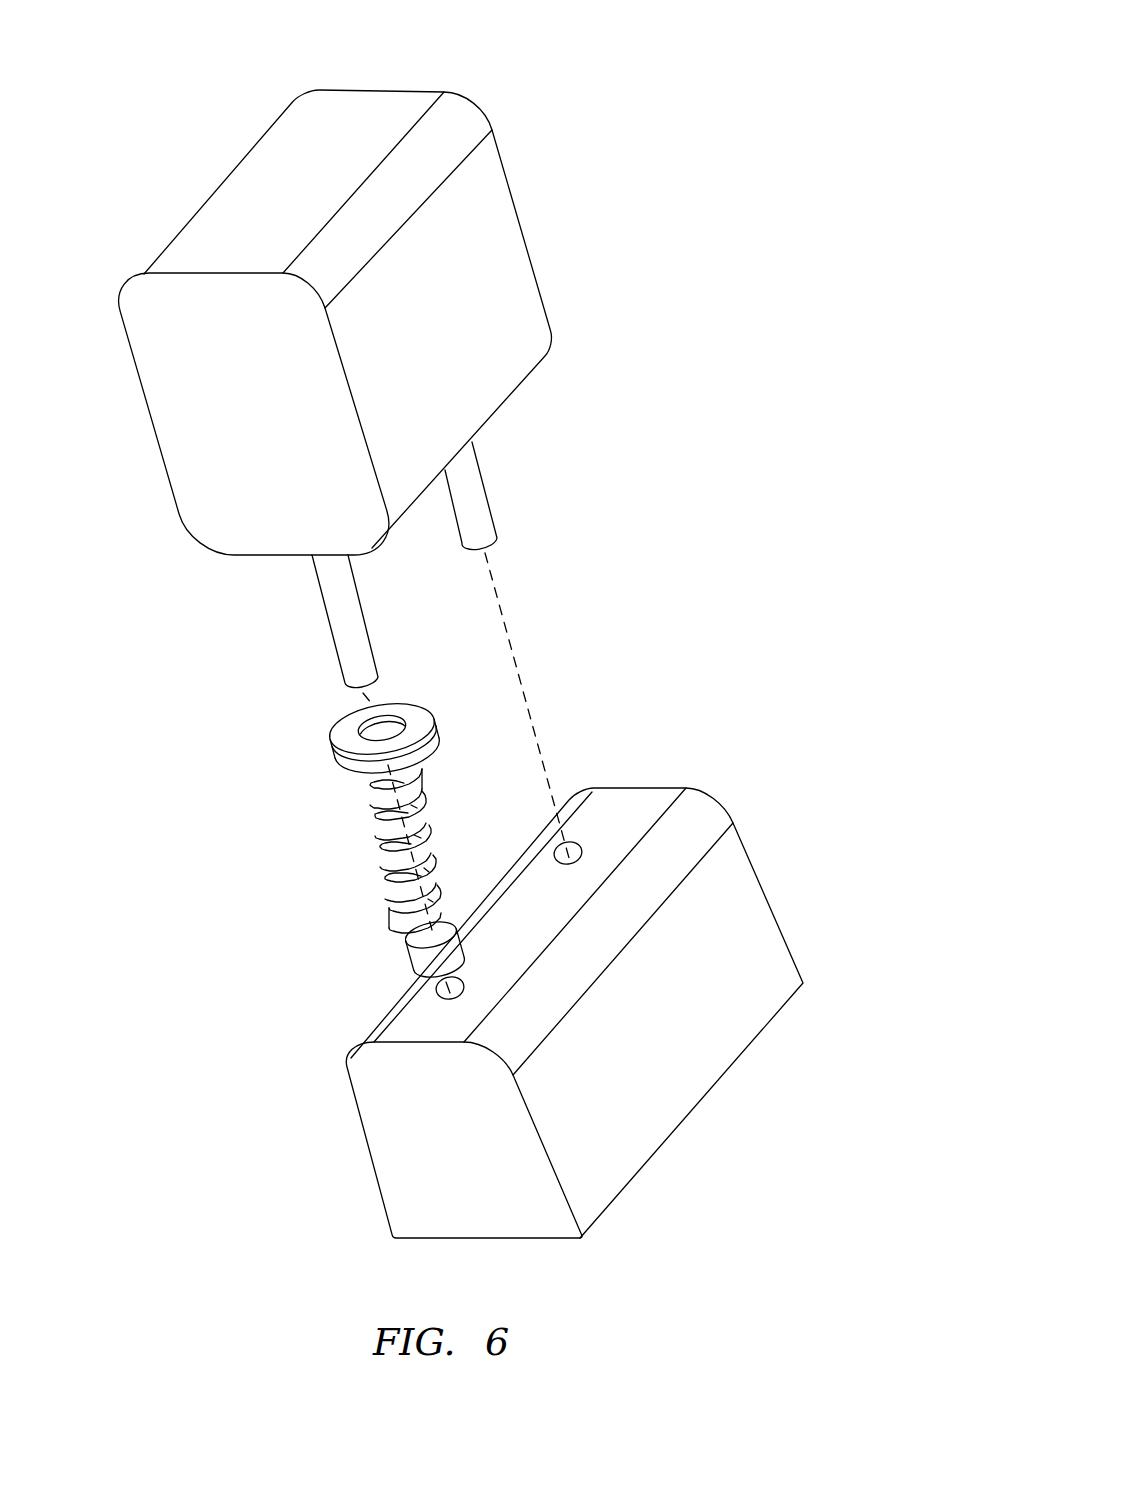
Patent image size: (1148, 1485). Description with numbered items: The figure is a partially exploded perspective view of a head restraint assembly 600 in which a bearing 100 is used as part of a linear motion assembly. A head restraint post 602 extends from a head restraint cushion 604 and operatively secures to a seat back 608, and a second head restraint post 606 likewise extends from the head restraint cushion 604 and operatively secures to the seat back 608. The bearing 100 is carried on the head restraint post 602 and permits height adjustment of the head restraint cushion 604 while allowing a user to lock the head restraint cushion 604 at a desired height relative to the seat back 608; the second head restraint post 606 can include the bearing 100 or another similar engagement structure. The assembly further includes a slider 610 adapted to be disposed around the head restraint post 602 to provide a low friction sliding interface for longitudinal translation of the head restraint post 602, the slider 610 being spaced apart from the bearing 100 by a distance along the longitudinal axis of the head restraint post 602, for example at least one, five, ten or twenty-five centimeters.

The head restraint assembly 600 is at (738, 73).
The head restraint post 602 is at (328, 620).
The head restraint cushion 604 is at (527, 252).
The second head restraint post 606 is at (492, 507).
The seat back 608 is at (777, 917).
The slider 610 is at (403, 958).
The bearing 100 is at (427, 798).